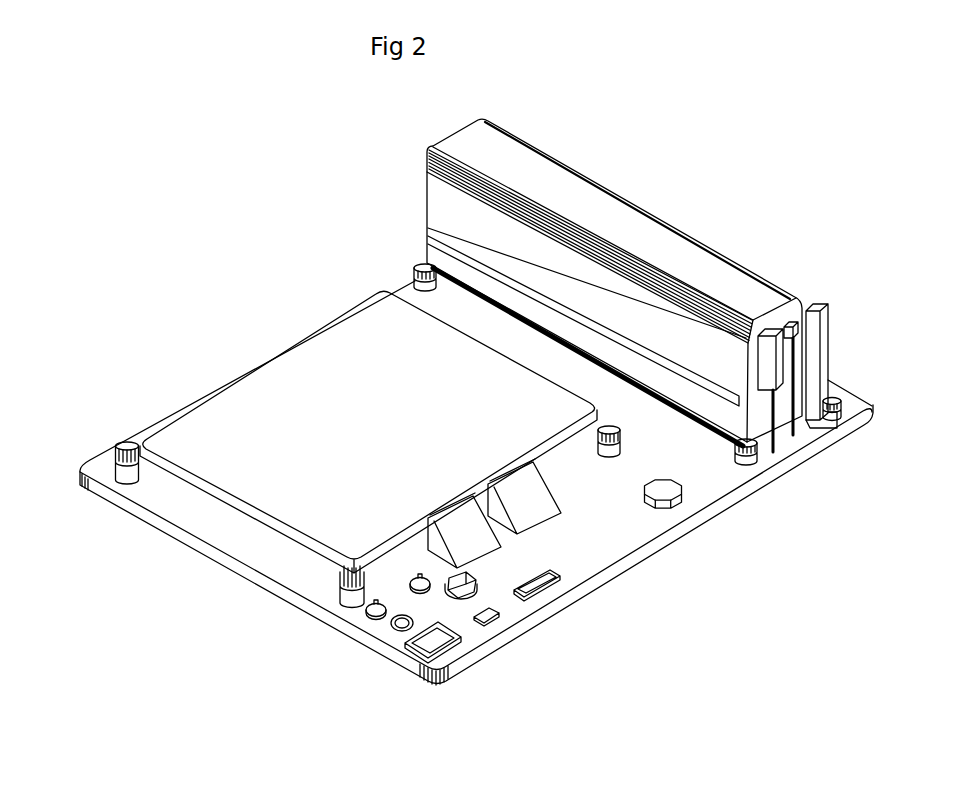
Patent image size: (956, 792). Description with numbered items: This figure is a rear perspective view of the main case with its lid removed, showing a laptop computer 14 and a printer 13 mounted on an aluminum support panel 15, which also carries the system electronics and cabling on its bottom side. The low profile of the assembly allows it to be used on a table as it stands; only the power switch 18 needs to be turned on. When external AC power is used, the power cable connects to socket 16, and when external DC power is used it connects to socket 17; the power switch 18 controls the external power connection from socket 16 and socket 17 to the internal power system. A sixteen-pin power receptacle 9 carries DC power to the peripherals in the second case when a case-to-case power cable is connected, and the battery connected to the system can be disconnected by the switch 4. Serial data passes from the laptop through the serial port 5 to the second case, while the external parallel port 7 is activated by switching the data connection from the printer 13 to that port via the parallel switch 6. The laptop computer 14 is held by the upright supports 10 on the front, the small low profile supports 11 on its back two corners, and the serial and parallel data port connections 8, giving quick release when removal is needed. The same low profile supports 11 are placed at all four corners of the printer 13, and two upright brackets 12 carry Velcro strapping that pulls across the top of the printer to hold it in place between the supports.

The switch 4 is at (433, 587).
The serial port 5 is at (493, 620).
The parallel switch 6 is at (477, 583).
The external parallel port 7 is at (547, 593).
The serial and parallel data port connections 8 is at (470, 547).
The 16-pin power receptacle 9 is at (677, 507).
The upright supports 10 is at (118, 470).
The small low profile supports 11 is at (733, 456).
The upright brackets 12 is at (822, 348).
The printer 13 is at (783, 292).
The laptop computer 14 is at (297, 370).
The aluminum support panel 15 is at (762, 493).
The socket 16 is at (447, 650).
The socket 17 is at (390, 632).
The power switch 18 is at (370, 616).